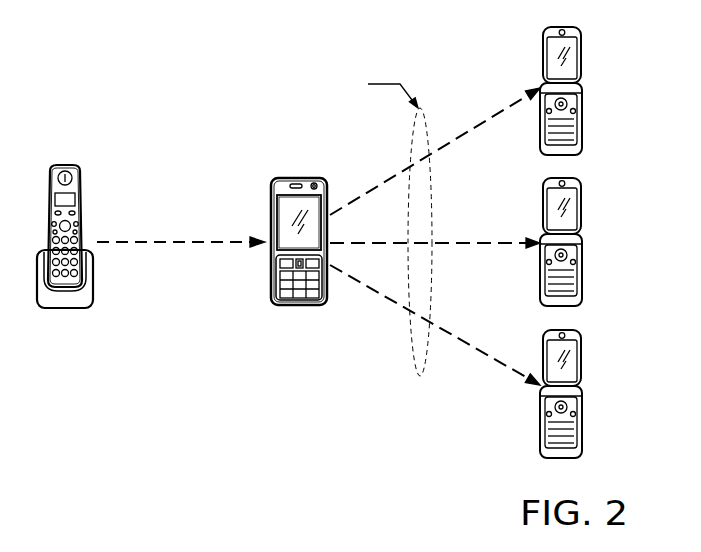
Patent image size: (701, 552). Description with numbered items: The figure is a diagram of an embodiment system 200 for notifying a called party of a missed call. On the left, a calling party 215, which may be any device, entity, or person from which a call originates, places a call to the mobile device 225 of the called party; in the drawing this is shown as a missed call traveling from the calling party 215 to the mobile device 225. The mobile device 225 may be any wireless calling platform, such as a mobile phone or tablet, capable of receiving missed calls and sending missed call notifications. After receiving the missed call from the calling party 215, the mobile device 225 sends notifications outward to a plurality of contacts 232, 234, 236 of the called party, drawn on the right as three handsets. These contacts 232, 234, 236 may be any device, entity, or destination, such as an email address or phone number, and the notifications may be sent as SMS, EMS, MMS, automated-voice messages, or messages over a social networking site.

The system 200 is at (136, 77).
The calling party 215 is at (65, 166).
The mobile device 225 is at (297, 177).
The contact 232 is at (581, 72).
The contact 234 is at (582, 210).
The contact 236 is at (583, 415).